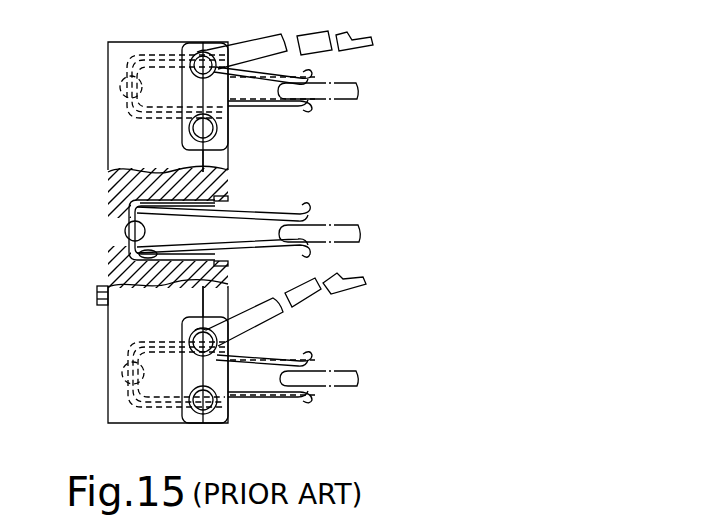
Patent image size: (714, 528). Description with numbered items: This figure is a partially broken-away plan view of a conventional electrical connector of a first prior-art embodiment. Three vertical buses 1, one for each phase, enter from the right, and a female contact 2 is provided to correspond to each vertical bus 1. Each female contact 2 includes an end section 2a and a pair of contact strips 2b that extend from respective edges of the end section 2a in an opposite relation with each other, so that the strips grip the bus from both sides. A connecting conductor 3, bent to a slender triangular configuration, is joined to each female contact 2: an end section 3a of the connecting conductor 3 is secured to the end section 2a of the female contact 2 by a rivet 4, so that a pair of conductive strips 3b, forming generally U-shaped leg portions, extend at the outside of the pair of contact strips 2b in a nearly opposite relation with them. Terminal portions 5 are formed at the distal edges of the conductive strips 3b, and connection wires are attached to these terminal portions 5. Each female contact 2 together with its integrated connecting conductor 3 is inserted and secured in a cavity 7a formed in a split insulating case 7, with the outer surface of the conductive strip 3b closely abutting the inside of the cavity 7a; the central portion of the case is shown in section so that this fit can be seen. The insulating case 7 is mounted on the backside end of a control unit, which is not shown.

The vertical bus 1 is at (350, 98).
The female contact 2 is at (293, 76).
The end section 2a is at (130, 246).
The contact strips 2b is at (192, 214).
The connecting conductor 3 is at (162, 50).
The end section 3a is at (128, 204).
The conductive strips 3b is at (214, 170).
The rivet 4 is at (120, 86).
The terminal portions 5 is at (220, 198).
The split insulating case 7 is at (106, 320).
The cavity 7a is at (130, 262).